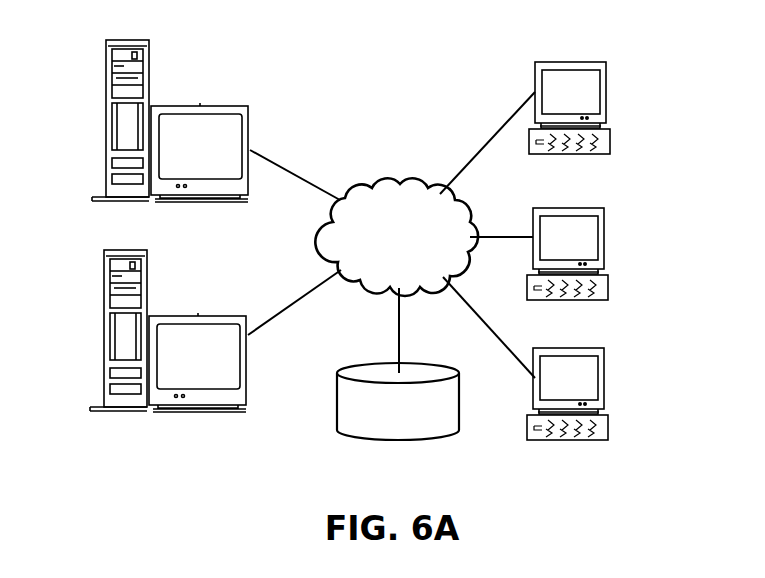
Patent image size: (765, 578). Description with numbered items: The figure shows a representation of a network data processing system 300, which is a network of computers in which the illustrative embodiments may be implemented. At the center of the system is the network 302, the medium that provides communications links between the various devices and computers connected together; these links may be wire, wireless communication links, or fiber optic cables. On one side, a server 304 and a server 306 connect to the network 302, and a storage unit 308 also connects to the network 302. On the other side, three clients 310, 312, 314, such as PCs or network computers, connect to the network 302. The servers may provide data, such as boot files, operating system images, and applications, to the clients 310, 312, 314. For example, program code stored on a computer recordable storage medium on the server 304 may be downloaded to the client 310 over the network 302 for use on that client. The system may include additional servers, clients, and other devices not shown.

The network data processing system 300 is at (449, 84).
The network 302 is at (370, 187).
The server 304 is at (106, 103).
The server 306 is at (104, 312).
The storage unit 308 is at (337, 416).
The client 310 is at (607, 93).
The client 312 is at (607, 238).
The client 314 is at (606, 380).